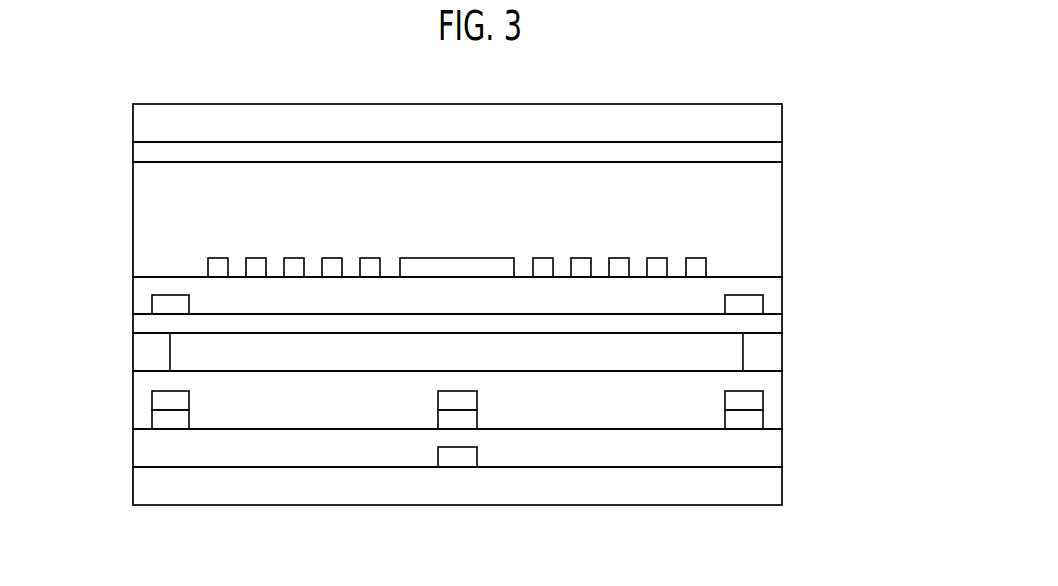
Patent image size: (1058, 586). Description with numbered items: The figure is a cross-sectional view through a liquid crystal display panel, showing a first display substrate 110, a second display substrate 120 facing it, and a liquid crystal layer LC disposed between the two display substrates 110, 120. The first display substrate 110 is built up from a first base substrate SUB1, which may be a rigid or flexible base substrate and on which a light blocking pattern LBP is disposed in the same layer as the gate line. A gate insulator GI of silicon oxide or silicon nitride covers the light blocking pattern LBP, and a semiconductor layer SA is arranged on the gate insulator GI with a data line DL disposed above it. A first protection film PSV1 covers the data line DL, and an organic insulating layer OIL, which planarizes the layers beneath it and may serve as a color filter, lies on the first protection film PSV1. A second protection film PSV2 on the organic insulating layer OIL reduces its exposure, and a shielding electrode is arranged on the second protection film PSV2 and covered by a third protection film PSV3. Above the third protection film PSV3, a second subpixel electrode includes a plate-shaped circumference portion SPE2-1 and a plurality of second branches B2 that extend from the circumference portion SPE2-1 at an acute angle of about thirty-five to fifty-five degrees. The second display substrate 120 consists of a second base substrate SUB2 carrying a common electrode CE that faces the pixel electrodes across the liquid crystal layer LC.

The second base substrate SUB2 is at (777, 122).
The common electrode CE is at (777, 153).
The liquid crystal layer LC is at (777, 211).
The second branches B2 is at (218, 266).
The circumference portion SPE2-1 is at (463, 266).
The third protection film PSV3 is at (777, 292).
The second protection film PSV2 is at (777, 324).
The organic insulating layer OIL is at (777, 356).
The first protection film PSV1 is at (777, 396).
The data line DL is at (152, 400).
The semiconductor layer SA is at (172, 420).
The gate insulator GI is at (777, 453).
The light blocking pattern LBP is at (459, 458).
The first base substrate SUB1 is at (777, 491).
The second display substrate 120 is at (851, 105).
The first display substrate 110 is at (853, 272).